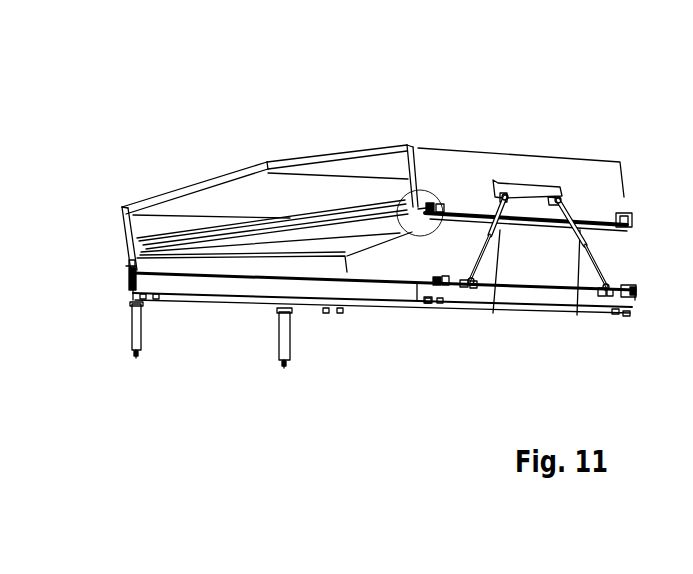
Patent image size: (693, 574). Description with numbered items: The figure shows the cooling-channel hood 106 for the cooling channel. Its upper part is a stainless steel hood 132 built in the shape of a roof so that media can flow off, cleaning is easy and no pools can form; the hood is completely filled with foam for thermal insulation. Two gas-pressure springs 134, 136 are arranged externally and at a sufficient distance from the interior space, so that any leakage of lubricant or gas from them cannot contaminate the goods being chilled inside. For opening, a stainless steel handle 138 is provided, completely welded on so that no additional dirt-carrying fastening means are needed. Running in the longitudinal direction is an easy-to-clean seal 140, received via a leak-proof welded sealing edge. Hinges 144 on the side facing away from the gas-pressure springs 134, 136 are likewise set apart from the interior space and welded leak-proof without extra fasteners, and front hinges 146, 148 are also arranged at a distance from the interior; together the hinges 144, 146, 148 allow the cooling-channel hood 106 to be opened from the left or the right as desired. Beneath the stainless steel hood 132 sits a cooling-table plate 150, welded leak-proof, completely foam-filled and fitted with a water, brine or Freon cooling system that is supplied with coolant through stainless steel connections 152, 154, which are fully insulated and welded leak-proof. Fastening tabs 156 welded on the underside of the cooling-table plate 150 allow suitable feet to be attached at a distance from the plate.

The cooling-channel hood 106 is at (382, 130).
The stainless steel hood 132 is at (153, 197).
The gas-pressure spring 134 is at (463, 310).
The gas-pressure spring 136 is at (573, 310).
The stainless steel handle 138 is at (540, 180).
The seal 140 is at (132, 278).
The hinges 144 is at (130, 276).
The front hinge 146 is at (627, 313).
The front hinge 148 is at (627, 210).
The cooling-table plate 150 is at (355, 287).
The connection 152 is at (134, 358).
The connection 154 is at (283, 365).
The fastening tabs 156 is at (428, 303).